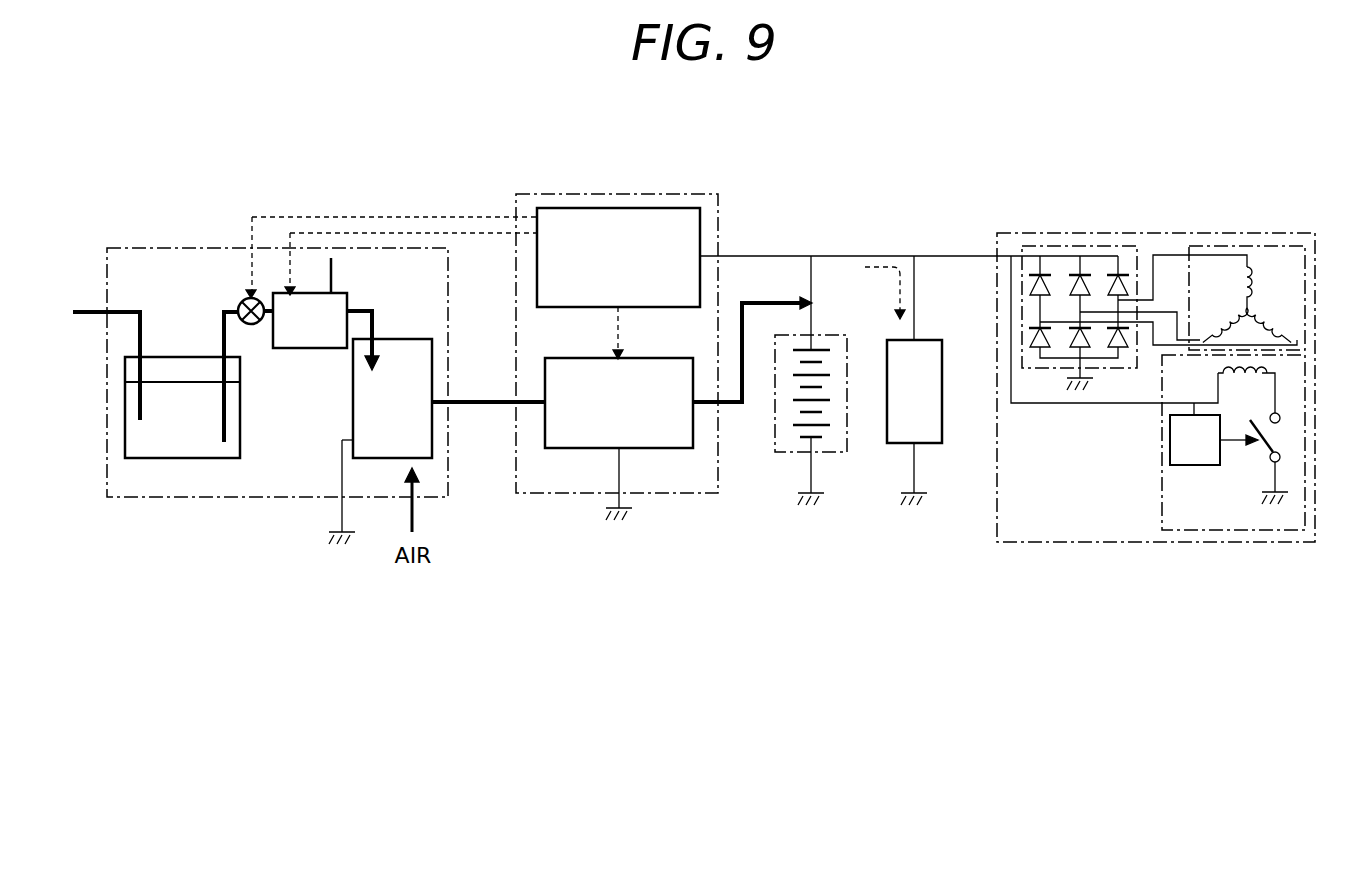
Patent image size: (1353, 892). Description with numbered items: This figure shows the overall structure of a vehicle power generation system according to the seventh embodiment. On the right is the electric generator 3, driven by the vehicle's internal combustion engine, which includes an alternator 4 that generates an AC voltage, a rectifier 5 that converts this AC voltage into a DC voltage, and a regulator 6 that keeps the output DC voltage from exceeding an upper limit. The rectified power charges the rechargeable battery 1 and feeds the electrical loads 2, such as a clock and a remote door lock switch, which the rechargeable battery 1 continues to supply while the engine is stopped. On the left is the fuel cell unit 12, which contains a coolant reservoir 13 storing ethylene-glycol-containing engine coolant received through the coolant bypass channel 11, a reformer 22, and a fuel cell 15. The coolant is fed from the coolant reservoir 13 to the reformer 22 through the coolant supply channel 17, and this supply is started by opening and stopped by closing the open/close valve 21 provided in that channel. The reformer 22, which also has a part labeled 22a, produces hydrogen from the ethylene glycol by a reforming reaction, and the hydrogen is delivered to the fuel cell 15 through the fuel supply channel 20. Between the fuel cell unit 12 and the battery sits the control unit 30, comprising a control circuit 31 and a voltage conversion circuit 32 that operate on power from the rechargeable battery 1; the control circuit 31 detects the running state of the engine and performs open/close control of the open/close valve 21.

The rechargeable battery 1 is at (837, 335).
The electrical loads 2 is at (930, 340).
The electric generator 3 is at (1039, 226).
The alternator 4 is at (1242, 245).
The rectifier 5 is at (1095, 246).
The regulator 6 is at (1198, 530).
The coolant bypass channel 11 is at (77, 311).
The fuel cell unit 12 is at (227, 503).
The coolant reservoir 13 is at (148, 458).
The fuel cell 15 is at (432, 443).
The coolant supply channel 17 is at (223, 333).
The fuel supply channel 20 is at (363, 305).
The open/close valve 21 is at (239, 301).
The reformer 22 is at (312, 348).
The pump drive input 22a is at (332, 272).
The control unit 30 is at (582, 186).
The control circuit 31 is at (658, 208).
The voltage conversion circuit 32 is at (670, 450).